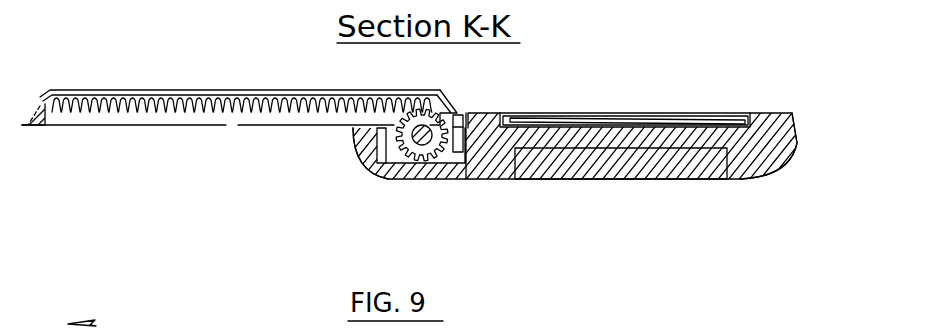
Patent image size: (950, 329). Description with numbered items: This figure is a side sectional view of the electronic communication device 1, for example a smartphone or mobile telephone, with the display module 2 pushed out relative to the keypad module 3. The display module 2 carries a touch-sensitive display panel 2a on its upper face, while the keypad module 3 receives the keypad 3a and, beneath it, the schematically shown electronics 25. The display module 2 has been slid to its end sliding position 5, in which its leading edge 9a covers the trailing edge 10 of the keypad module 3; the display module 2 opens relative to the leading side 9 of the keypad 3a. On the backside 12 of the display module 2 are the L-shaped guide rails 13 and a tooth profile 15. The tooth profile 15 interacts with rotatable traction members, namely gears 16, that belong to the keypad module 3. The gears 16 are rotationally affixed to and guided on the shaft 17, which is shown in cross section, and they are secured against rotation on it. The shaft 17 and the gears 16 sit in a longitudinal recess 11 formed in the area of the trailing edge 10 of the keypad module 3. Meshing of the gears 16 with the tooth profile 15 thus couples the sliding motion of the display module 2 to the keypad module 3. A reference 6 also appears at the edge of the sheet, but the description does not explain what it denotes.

The electronic communication device 1 is at (122, 75).
The display module 2 is at (187, 97).
The touch-sensitive display panel 2a is at (272, 93).
The keypad module 3 is at (697, 163).
The keypad 3a is at (660, 116).
The end sliding position 5 is at (466, 110).
The arrow 6 is at (33, 327).
The leading side of the keypad 9 is at (797, 147).
The leading edge of the display module 9a is at (453, 110).
The trailing edge of the keypad module 10 is at (353, 133).
The longitudinal recess 11 is at (377, 168).
The backside of the display module 12 is at (230, 128).
The guide rails 13 is at (155, 117).
The tooth profile 15 is at (107, 110).
The gears 16 is at (457, 160).
The shaft 17 is at (410, 165).
The electronics 25 is at (577, 163).